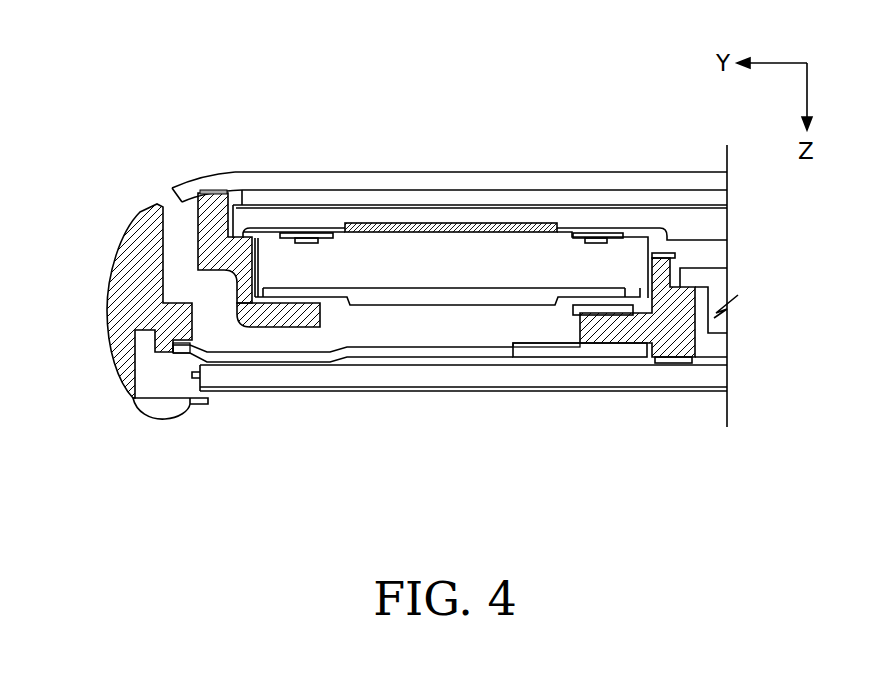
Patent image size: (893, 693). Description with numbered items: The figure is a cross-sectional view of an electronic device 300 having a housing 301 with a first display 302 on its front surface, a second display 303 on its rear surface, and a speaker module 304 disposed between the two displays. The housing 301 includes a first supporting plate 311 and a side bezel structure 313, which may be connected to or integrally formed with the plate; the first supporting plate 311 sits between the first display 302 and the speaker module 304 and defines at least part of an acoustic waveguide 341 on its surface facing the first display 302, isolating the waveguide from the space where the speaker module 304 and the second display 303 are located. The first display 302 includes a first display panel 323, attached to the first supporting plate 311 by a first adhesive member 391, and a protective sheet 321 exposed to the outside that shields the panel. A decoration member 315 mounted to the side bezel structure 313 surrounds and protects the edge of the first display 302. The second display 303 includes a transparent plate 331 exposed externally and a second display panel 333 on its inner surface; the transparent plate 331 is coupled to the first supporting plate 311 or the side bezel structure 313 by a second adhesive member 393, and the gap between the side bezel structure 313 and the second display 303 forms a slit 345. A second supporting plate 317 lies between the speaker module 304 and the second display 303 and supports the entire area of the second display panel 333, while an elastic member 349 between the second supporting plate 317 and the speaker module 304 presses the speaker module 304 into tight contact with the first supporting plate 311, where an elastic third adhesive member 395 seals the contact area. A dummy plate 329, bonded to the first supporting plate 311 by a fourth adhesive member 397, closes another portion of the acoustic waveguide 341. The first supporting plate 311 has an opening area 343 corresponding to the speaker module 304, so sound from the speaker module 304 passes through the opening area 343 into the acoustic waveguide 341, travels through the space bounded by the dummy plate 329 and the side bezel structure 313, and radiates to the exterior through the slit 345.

The electronic device 300 is at (110, 58).
The housing 301 is at (374, 362).
The first display 302 is at (459, 439).
The second display 303 is at (480, 148).
The speaker module 304 is at (493, 257).
The first supporting plate 311 is at (638, 336).
The side bezel structure 313 is at (133, 253).
The decoration member 315 is at (160, 403).
The second supporting plate 317 is at (713, 223).
The protective sheet 321 is at (537, 391).
The first display panel 323 is at (580, 373).
The dummy plate 329 is at (376, 350).
The transparent plate 331 is at (577, 180).
The second display panel 333 is at (557, 101).
The acoustic waveguide 341 is at (279, 338).
The opening area 343 is at (455, 321).
The slit 345 is at (171, 198).
The elastic member 349 is at (414, 255).
The first adhesive member 391 is at (670, 363).
The second adhesive member 393 is at (205, 189).
The third adhesive member 395 is at (288, 306).
The fourth adhesive member 397 is at (172, 394).